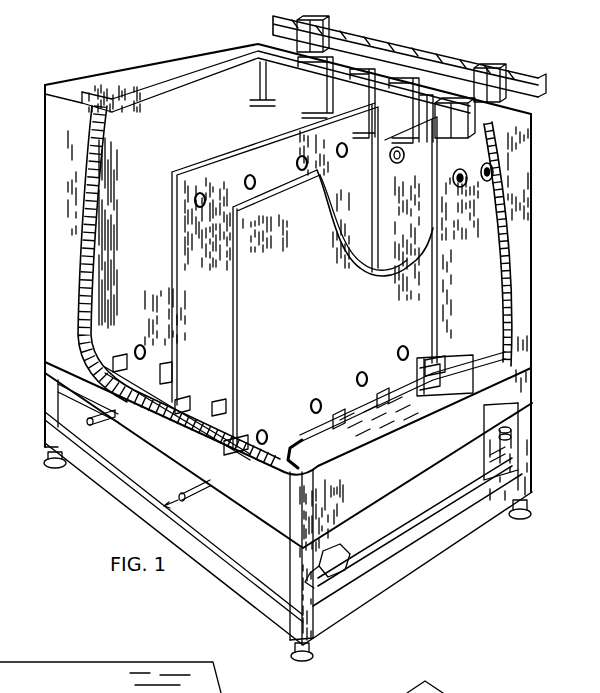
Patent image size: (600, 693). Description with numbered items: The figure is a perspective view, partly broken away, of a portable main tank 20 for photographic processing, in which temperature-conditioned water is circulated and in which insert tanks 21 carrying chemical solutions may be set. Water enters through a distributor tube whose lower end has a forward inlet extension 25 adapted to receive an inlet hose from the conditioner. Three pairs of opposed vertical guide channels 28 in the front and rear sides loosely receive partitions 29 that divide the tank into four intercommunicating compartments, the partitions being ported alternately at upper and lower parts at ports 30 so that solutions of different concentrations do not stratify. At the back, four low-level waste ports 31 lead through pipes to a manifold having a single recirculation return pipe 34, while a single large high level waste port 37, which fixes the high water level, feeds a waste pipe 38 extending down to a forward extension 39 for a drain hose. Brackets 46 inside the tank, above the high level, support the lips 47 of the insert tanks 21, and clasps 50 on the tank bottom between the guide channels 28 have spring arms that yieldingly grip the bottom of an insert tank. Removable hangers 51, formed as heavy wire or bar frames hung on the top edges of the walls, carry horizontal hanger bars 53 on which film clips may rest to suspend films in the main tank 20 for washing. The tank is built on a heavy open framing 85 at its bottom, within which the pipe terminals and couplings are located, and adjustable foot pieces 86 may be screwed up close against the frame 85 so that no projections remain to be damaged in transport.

The main tank 20 is at (52, 288).
The insert tank 21 is at (192, 94).
The forward inlet extension 25 is at (105, 425).
The vertical guide channel 28 is at (438, 265).
The partition 29 is at (232, 372).
The port 30 is at (140, 345).
The low-level waste port 31 is at (459, 190).
The recirculation return pipe 34 is at (205, 488).
The high level waste port 37 is at (490, 183).
The waste pipe 38 is at (505, 428).
The forward extension 39 is at (413, 515).
The bracket 46 is at (446, 140).
The lip 47 is at (265, 65).
The clasp 50 is at (303, 463).
The hanger 51 is at (443, 60).
The hanger bar 53 is at (383, 147).
The open framing 85 is at (512, 492).
The adjustable foot piece 86 is at (312, 655).